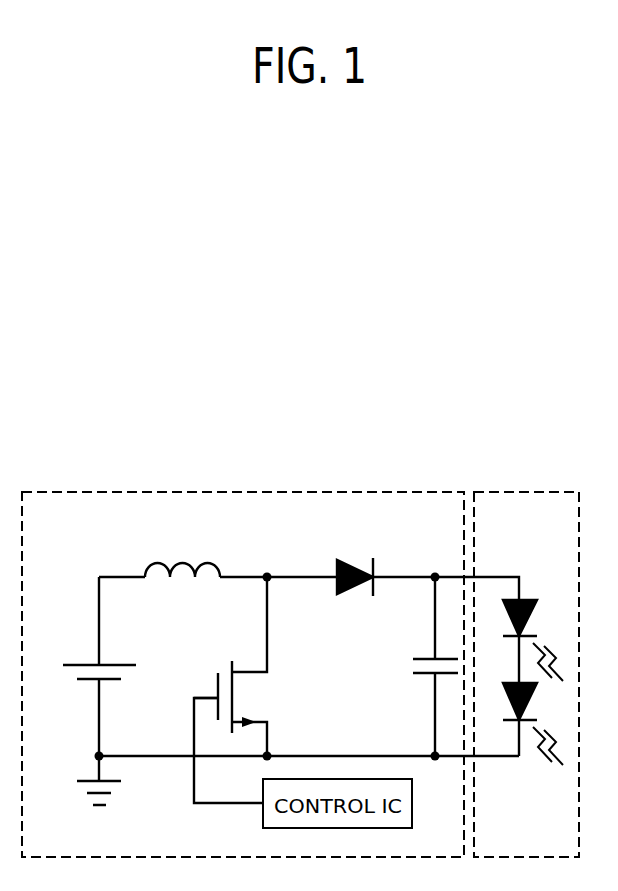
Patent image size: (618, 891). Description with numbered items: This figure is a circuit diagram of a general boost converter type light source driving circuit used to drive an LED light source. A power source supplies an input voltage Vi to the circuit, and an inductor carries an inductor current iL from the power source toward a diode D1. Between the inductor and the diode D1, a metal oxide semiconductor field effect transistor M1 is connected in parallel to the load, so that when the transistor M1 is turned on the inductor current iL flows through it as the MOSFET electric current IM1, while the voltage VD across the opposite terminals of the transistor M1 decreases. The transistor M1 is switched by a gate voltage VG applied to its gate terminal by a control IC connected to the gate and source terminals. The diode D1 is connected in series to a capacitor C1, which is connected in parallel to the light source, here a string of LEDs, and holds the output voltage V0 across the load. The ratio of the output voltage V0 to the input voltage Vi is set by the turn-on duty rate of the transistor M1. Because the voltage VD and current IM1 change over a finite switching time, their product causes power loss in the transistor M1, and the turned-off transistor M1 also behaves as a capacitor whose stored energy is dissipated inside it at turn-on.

The input voltage Vi is at (86, 691).
The inductor current iL is at (196, 549).
The drain voltage VD is at (269, 560).
The metal oxide semiconductor field effect transistor (MOSFET) M1 is at (253, 690).
The gate voltage VG is at (200, 678).
The MOSFET electric current IM1 is at (297, 680).
The diode D1 is at (355, 560).
The capacitor C1 is at (420, 666).
The output voltage V0 is at (533, 645).